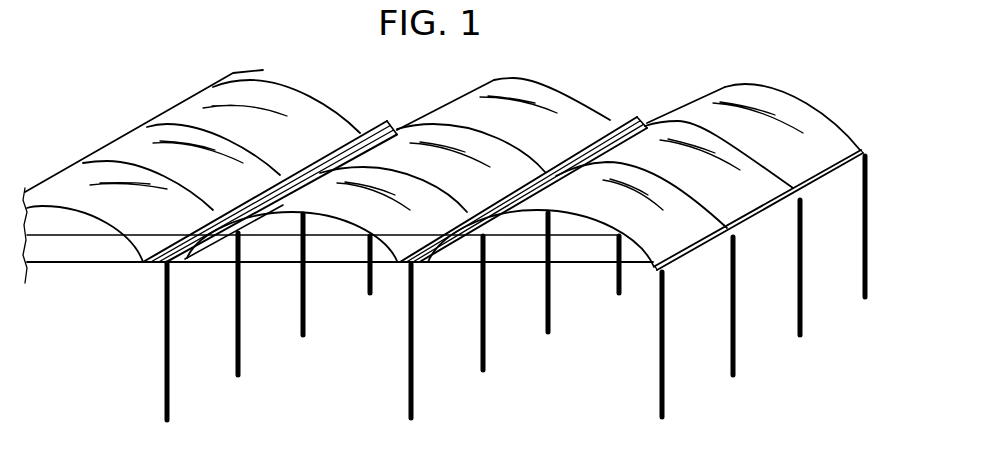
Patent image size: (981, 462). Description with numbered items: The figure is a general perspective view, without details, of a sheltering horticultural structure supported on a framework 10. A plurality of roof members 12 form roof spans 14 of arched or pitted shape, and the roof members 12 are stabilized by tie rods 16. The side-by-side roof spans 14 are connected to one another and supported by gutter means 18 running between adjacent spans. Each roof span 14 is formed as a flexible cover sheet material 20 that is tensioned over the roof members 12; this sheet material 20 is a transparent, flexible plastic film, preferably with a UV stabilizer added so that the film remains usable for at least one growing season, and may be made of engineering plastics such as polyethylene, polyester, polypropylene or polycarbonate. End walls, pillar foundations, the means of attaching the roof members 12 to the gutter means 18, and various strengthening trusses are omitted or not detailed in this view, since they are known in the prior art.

The framework 10 is at (416, 413).
The roof member 12 is at (604, 116).
The roof span 14 is at (556, 84).
The tie rod 16 is at (592, 264).
The gutter means 18 is at (158, 265).
The flexible cover sheet material 20 is at (316, 106).